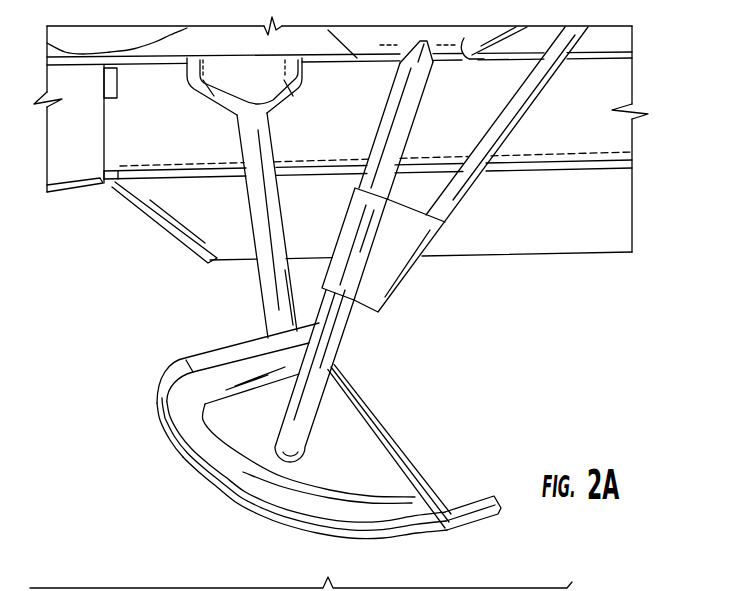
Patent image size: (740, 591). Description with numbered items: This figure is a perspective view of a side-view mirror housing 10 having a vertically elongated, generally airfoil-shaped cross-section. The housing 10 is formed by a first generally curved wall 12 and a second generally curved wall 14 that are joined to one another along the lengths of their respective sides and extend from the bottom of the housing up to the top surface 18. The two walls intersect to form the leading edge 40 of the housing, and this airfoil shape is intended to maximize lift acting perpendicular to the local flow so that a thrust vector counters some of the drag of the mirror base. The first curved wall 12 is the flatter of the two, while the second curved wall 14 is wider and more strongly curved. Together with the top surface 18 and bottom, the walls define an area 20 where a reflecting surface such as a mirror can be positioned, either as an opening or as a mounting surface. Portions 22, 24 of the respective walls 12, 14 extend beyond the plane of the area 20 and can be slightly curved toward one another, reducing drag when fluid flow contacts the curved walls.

The side-view mirror housing 10 is at (478, 420).
The first curved wall 12 is at (372, 429).
The second curved wall 14 is at (274, 522).
The top surface 18 is at (480, 562).
The area 20 is at (370, 412).
The portion of first wall 22 is at (362, 333).
The portion of second wall 24 is at (627, 543).
The leading edge 40 is at (160, 391).